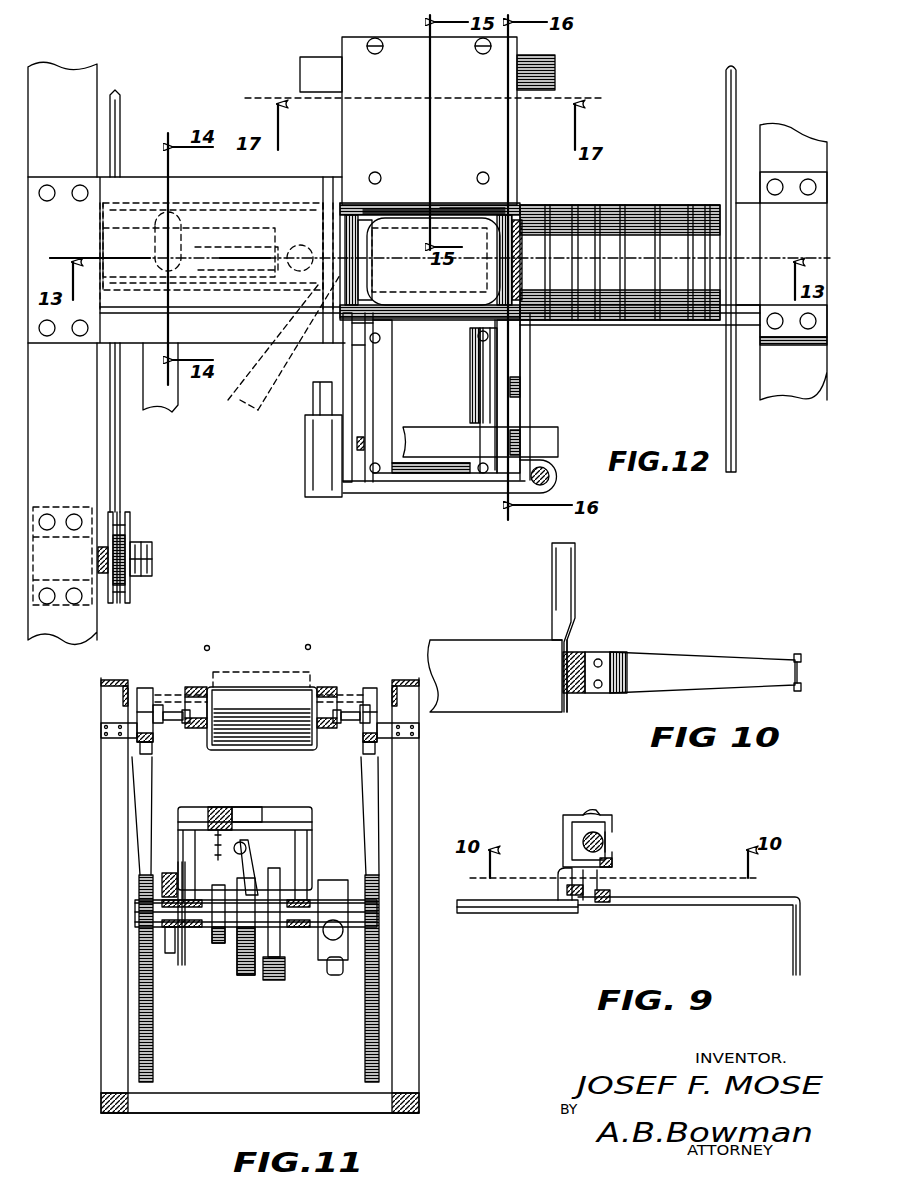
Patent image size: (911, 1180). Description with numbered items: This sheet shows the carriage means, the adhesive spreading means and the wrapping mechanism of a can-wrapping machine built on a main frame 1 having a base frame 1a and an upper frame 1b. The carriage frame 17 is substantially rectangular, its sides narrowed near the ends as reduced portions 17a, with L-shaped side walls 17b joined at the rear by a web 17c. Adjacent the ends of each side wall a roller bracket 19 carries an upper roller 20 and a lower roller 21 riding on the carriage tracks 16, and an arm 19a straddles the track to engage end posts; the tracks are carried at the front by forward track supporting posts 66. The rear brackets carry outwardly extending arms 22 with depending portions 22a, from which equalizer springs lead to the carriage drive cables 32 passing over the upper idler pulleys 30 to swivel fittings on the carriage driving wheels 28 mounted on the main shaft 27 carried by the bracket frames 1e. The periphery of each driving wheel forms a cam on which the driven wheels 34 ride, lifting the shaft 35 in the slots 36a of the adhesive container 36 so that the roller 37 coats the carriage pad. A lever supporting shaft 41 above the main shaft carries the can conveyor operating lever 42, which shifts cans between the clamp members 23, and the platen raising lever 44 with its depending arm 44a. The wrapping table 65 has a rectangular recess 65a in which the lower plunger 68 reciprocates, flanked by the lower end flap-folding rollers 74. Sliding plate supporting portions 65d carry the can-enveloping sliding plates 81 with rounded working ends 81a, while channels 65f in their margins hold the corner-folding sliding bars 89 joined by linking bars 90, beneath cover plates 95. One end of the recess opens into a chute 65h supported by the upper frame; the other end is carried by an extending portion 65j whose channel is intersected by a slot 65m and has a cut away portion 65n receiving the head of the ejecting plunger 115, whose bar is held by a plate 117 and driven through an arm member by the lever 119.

In FIG. 11, the frame 1 is at (162, 1103).
In FIG. 11, the base frame 1a is at (243, 1100).
In FIG. 12, the upper frame 1b is at (78, 490).
In FIG. 11, the upper frame 1b is at (387, 690).
In FIG. 11, the bracket frames 1e is at (190, 847).
In FIG. 12, the carriage tracks 16 is at (297, 410).
In FIG. 11, the carriage tracks 16 is at (306, 646).
In FIG. 9, the carriage tracks 16 is at (605, 845).
In FIG. 10, the carriage frame 17 is at (572, 602).
In FIG. 10, the reduced-width sides 17a is at (560, 652).
In FIG. 9, the reduced-width sides 17a is at (557, 893).
In FIG. 10, the side walls 17b is at (568, 572).
In FIG. 10, the web 17c is at (517, 698).
In FIG. 9, the web 17c is at (530, 900).
In FIG. 10, the roller brackets 19 is at (577, 695).
In FIG. 9, the roller brackets 19 is at (573, 817).
In FIG. 9, the arm 19a is at (607, 825).
In FIG. 11, the upper rollers 20 is at (220, 943).
In FIG. 9, the upper rollers 20 is at (593, 815).
In FIG. 9, the lower rollers 21 is at (612, 875).
In FIG. 10, the arms 22 is at (730, 637).
In FIG. 9, the arms 22 is at (687, 900).
In FIG. 9, the depending portions 22a is at (797, 933).
In FIG. 11, the clamp members 23 is at (253, 953).
In FIG. 11, the main shaft 27 is at (202, 937).
In FIG. 11, the carriage driving wheels 28 is at (165, 1013).
In FIG. 12, the upper idler pulleys 30 is at (135, 560).
In FIG. 12, the carriage drive cables 32 is at (120, 515).
In FIG. 11, the carriage drive cables 32 is at (157, 657).
In FIG. 11, the driven wheels 34 is at (142, 733).
In FIG. 11, the shaft 35 is at (347, 713).
In FIG. 11, the adhesive container 36 is at (293, 747).
In FIG. 11, the slots 36a is at (193, 697).
In FIG. 11, the roller 37 is at (240, 715).
In FIG. 11, the lever supporting shaft 41 is at (273, 813).
In FIG. 11, the can conveyor operating lever 42 is at (217, 817).
In FIG. 11, the platen raising lever 44 is at (240, 860).
In FIG. 11, the depending arm 44a is at (247, 877).
In FIG. 12, the wrapping table 65 is at (288, 185).
In FIG. 12, the recess 65a is at (460, 230).
In FIG. 12, the sliding plate supporting portions 65d is at (410, 398).
In FIG. 12, the channels 65f is at (500, 368).
In FIG. 12, the chute 65h is at (628, 220).
In FIG. 12, the extending portion 65j is at (243, 375).
In FIG. 12, the slot 65m is at (210, 247).
In FIG. 12, the cut away portion 65n is at (270, 385).
In FIG. 12, the forward track supporting posts 66 is at (357, 440).
In FIG. 12, the lower plunger 68 is at (485, 205).
In FIG. 12, the lower end flap-folding rollers 74 is at (347, 200).
In FIG. 12, the can-enveloping sliding plates 81 is at (385, 340).
In FIG. 12, the working ends 81a is at (453, 207).
In FIG. 12, the corner-folding sliding bars 89 is at (357, 345).
In FIG. 12, the linking bars 90 is at (472, 450).
In FIG. 12, the cover plates 95 is at (497, 130).
In FIG. 12, the ejecting plunger 115 is at (324, 238).
In FIG. 12, the plate 117 is at (130, 220).
In FIG. 12, the lever 119 is at (172, 417).